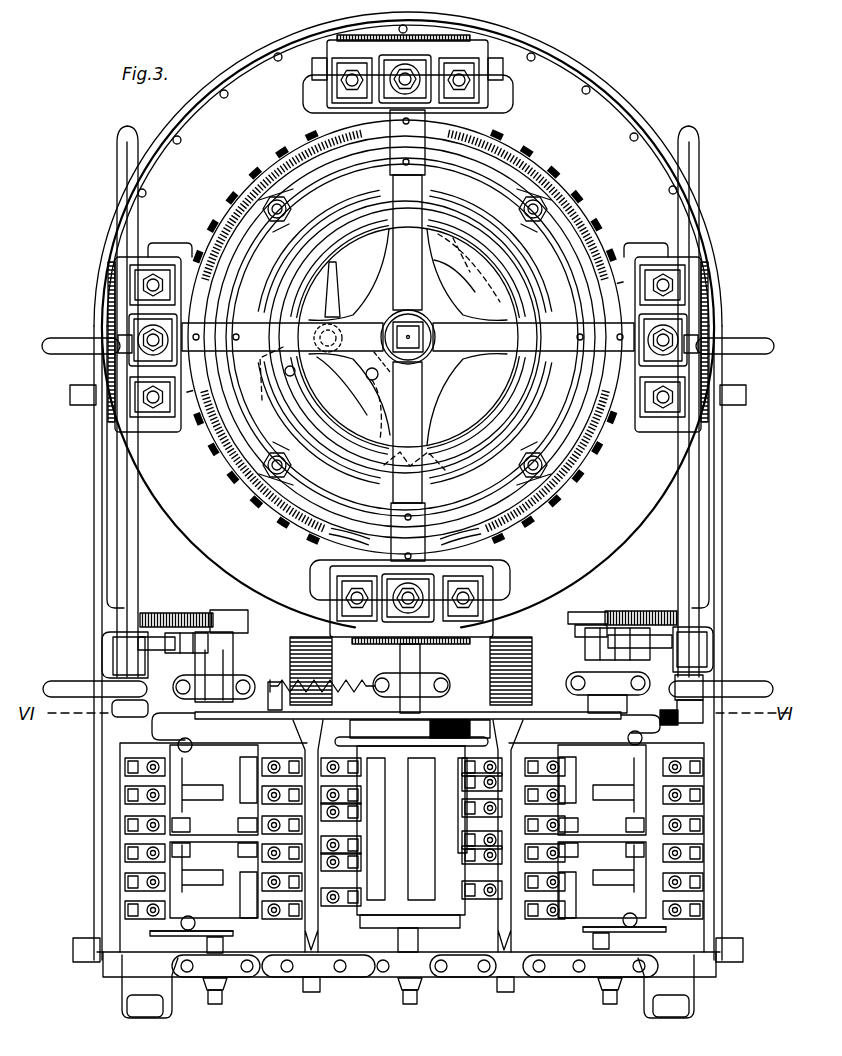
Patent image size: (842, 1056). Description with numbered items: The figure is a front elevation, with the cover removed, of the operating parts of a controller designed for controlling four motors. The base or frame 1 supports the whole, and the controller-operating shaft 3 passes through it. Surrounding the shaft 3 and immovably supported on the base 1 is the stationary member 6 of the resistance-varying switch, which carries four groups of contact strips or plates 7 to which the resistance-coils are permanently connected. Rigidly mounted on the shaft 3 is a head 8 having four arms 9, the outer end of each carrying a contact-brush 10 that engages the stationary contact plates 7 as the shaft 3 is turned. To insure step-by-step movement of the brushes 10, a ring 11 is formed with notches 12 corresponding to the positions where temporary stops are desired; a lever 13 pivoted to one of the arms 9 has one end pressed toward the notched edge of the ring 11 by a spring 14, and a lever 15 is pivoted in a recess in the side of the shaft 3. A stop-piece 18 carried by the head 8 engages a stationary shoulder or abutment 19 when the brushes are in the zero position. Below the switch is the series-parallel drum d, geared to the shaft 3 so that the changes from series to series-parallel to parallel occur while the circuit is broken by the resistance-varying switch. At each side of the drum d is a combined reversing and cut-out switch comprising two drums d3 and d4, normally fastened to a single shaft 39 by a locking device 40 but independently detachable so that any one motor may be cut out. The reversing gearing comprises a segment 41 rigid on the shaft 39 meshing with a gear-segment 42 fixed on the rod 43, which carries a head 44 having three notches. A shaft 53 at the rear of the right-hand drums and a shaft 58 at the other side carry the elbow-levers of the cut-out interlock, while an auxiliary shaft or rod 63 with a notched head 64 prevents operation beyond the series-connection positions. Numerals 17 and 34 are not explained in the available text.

The base or frame 1 is at (110, 300).
The controller-operating shaft 3 is at (424, 342).
The stationary member of the resistance-varying switch 6 is at (405, 337).
The contact strips or plates 7 is at (405, 337).
The head 8 is at (408, 337).
The arms 9 is at (408, 335).
The contact-brush 10 is at (435, 52).
The ring 11 is at (454, 272).
The notches 12 is at (506, 302).
The lever 13 is at (336, 280).
The spring 14 is at (325, 391).
The lever 15 is at (410, 358).
The pivot 17 is at (385, 360).
The stop-piece or projection 18 is at (373, 410).
The stationary shoulder or abutment 19 is at (406, 458).
The spring block 34 is at (400, 689).
The shaft 39 is at (226, 943).
The locking device 40 is at (178, 746).
The segment 41 is at (660, 708).
The gear-segment 42 is at (655, 735).
The rod 43 is at (686, 560).
The head 44 is at (644, 662).
The shaft 53 is at (604, 606).
The shaft 58 is at (230, 600).
The shaft or rod 63 is at (178, 527).
The notched head 64 is at (178, 686).
The series-parallel drum d is at (411, 844).
The drum d3 is at (408, 790).
The drum d4 is at (408, 880).